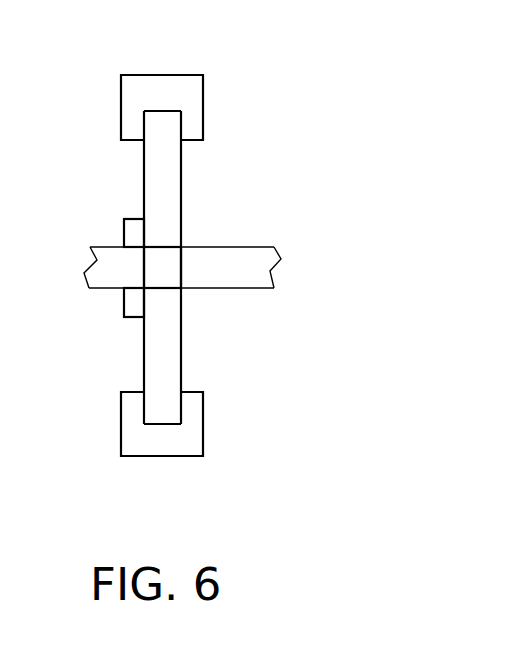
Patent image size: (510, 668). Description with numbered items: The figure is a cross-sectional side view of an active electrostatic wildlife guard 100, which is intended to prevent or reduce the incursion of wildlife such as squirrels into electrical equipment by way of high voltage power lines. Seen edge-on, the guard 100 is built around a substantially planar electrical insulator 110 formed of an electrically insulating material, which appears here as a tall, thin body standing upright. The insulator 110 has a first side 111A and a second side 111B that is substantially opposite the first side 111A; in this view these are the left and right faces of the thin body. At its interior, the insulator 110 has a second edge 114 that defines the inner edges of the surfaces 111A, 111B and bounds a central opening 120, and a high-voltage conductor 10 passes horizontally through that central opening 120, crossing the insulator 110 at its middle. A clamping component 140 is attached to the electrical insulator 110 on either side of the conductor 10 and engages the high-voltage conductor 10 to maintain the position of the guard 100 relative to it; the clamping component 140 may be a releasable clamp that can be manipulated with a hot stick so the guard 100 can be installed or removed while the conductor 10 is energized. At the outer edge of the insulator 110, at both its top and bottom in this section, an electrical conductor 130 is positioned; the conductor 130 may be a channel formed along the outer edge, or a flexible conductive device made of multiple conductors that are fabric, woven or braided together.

The active electrostatic wildlife guard 100 is at (339, 100).
The high-voltage conductor 10 is at (253, 246).
The electrical insulator 110 is at (173, 202).
The first side 111A is at (144, 338).
The second side 111B is at (180, 343).
The second edge 114 is at (171, 246).
The central opening 120 is at (169, 268).
The electrical conductor 130 is at (129, 98).
The clamping component 140 is at (123, 219).